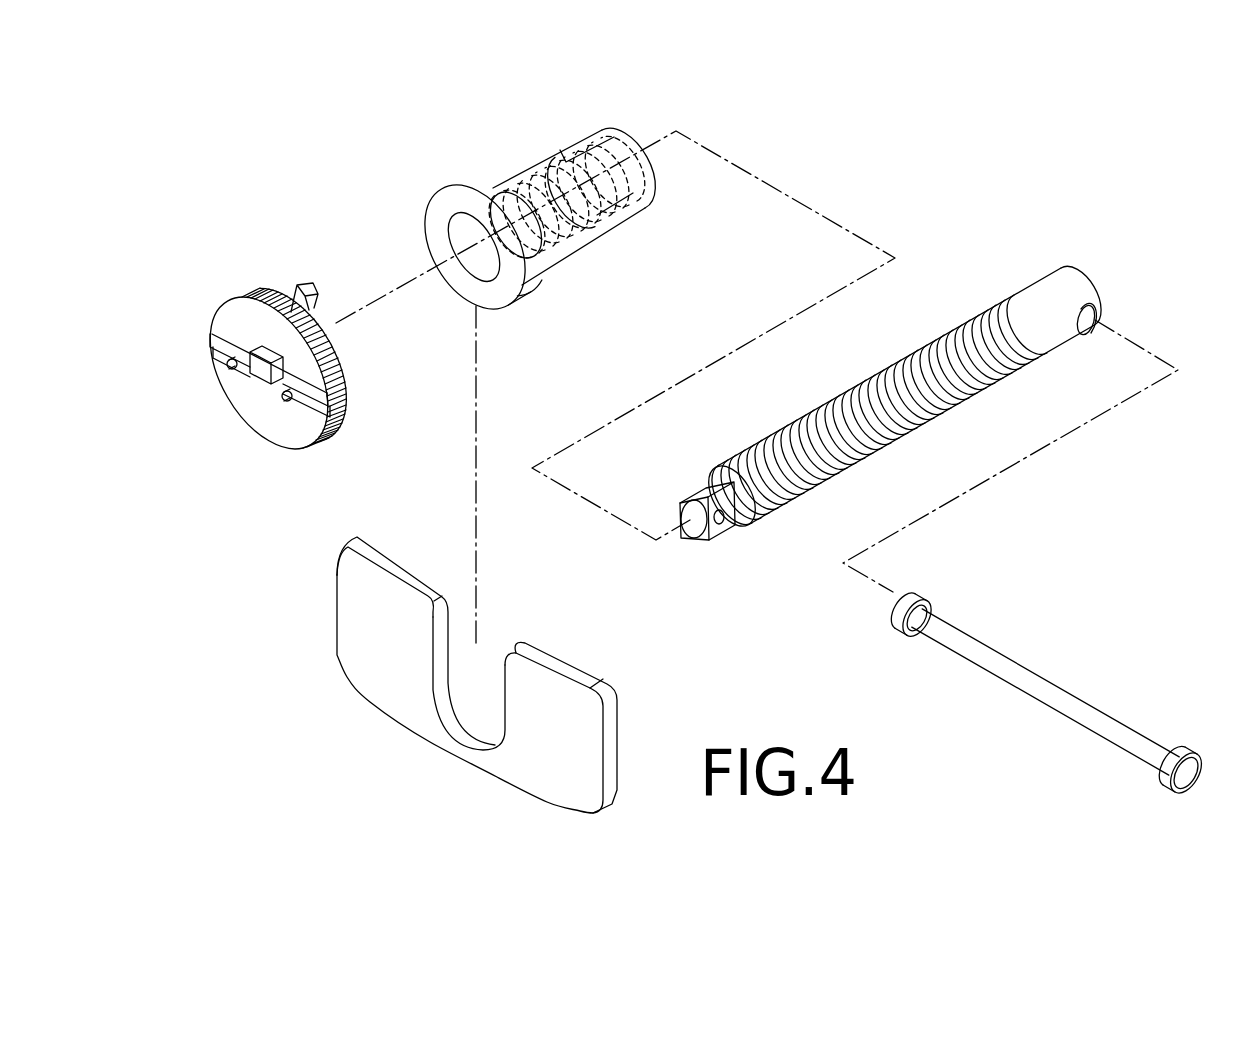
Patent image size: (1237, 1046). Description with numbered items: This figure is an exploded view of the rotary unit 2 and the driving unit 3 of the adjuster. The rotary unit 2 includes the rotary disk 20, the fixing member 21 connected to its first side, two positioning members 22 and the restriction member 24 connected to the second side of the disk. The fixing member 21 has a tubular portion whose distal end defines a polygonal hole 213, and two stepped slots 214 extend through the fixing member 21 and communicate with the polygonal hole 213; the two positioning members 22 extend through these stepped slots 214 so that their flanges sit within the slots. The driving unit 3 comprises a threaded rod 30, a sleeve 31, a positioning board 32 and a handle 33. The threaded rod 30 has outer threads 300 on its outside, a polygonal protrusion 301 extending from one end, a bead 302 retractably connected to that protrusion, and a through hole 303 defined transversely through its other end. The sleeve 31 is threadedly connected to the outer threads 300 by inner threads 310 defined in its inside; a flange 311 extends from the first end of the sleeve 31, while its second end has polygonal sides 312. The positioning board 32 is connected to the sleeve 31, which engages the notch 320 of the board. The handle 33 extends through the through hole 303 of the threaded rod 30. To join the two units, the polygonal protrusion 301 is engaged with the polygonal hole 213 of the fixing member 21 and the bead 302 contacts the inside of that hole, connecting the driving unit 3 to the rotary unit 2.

The rotary unit 2 is at (240, 270).
The rotary disk 20 is at (348, 395).
The fixing member 21 is at (213, 312).
The positioning members 22 is at (232, 370).
The restriction member 24 is at (305, 287).
The polygonal hole 213 is at (268, 385).
The stepped slots 214 is at (220, 348).
The driving unit 3 is at (1106, 267).
The threaded rod 30 is at (1017, 293).
The outer threads 300 is at (880, 385).
The polygonal protrusion 301 is at (702, 495).
The bead 302 is at (720, 522).
The through hole 303 is at (1084, 326).
The sleeve 31 is at (500, 177).
The inner threads 310 is at (577, 235).
The flange 311 is at (455, 187).
The slot 312 is at (588, 133).
The positioning board 32 is at (363, 690).
The notch 320 is at (477, 708).
The handle 33 is at (1048, 685).